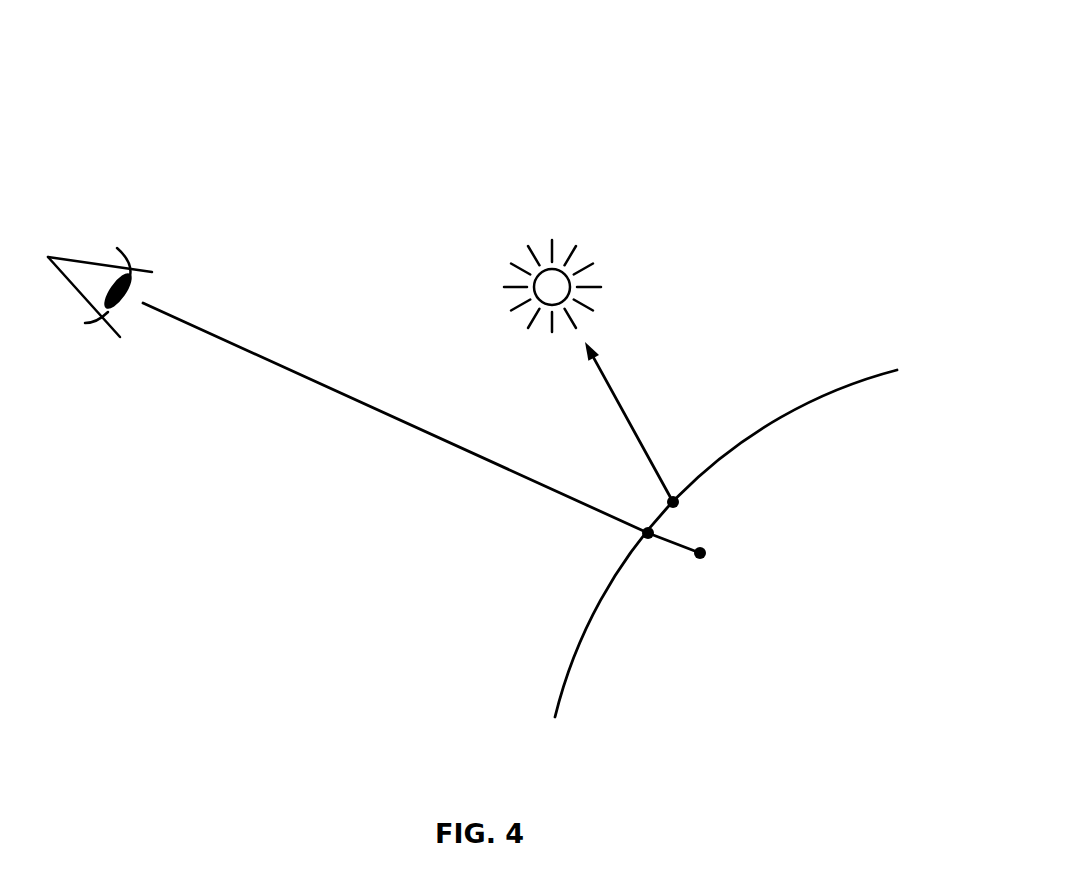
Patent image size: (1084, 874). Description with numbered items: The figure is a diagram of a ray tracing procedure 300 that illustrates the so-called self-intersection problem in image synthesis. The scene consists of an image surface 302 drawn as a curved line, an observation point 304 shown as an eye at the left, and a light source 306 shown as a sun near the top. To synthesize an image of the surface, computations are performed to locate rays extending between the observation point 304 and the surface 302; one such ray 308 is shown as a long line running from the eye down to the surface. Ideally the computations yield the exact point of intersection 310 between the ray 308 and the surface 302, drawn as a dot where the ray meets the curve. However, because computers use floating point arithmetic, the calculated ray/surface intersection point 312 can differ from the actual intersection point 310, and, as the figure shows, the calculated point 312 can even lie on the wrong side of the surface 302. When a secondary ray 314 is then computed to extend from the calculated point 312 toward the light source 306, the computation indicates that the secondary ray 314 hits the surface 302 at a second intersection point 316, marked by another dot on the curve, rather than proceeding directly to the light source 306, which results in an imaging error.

The ray tracing procedure 300 is at (796, 82).
The image surface 302 is at (840, 388).
The observation point 304 is at (92, 260).
The light source 306 is at (555, 268).
The ray 308 is at (263, 352).
The exact point of intersection 310 is at (648, 533).
The calculated ray/surface intersection point 312 is at (700, 553).
The secondary ray 314 is at (632, 418).
The second intersection point 316 is at (673, 502).